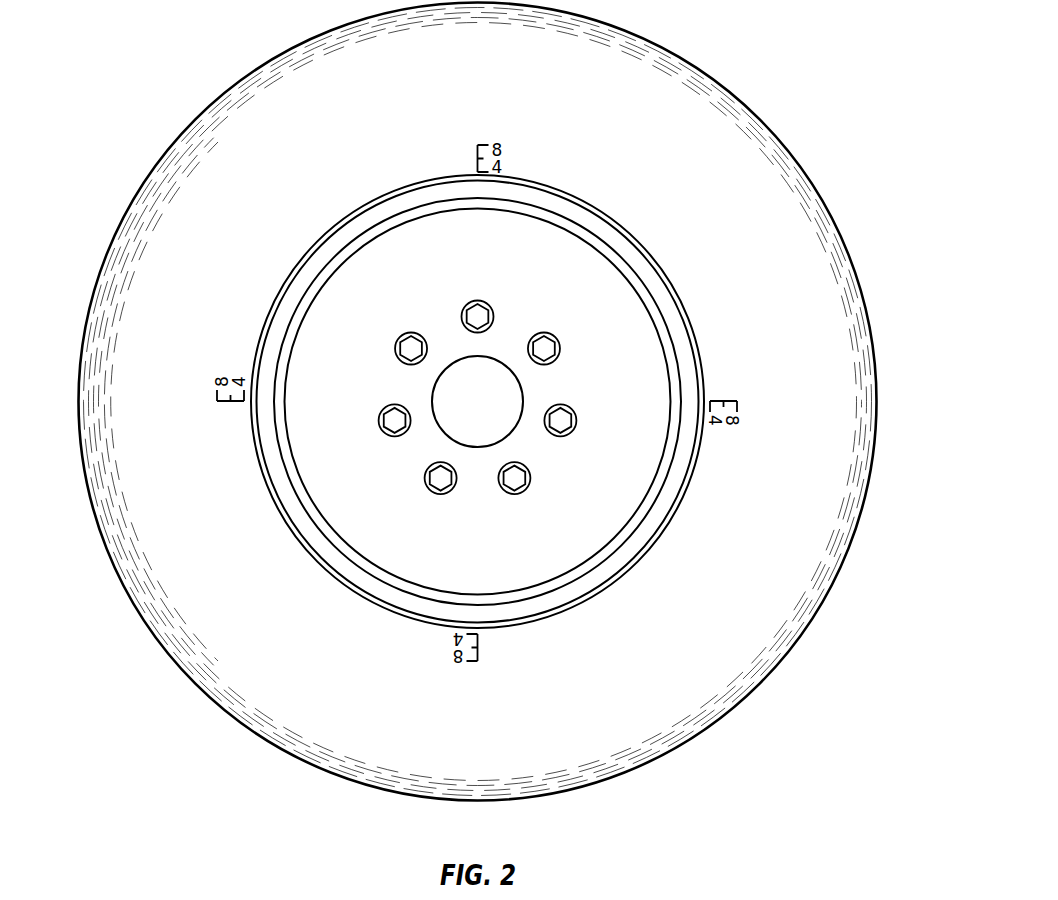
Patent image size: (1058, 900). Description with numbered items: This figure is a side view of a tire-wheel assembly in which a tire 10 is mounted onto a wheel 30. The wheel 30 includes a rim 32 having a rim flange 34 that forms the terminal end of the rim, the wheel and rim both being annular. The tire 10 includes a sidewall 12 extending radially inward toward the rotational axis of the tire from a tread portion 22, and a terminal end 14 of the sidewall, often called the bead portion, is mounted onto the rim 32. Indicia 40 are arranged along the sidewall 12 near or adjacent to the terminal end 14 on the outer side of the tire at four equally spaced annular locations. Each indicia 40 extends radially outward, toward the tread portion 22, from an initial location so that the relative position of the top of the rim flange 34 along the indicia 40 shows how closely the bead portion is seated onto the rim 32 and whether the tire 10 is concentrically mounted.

The tire 10 is at (852, 262).
The sidewall 12 is at (215, 597).
The terminal end 14 is at (392, 622).
The tread portion 22 is at (790, 637).
The wheel 30 is at (491, 547).
The rim 32 is at (639, 294).
The rim flange 34 is at (641, 242).
The indicia 40 is at (465, 132).